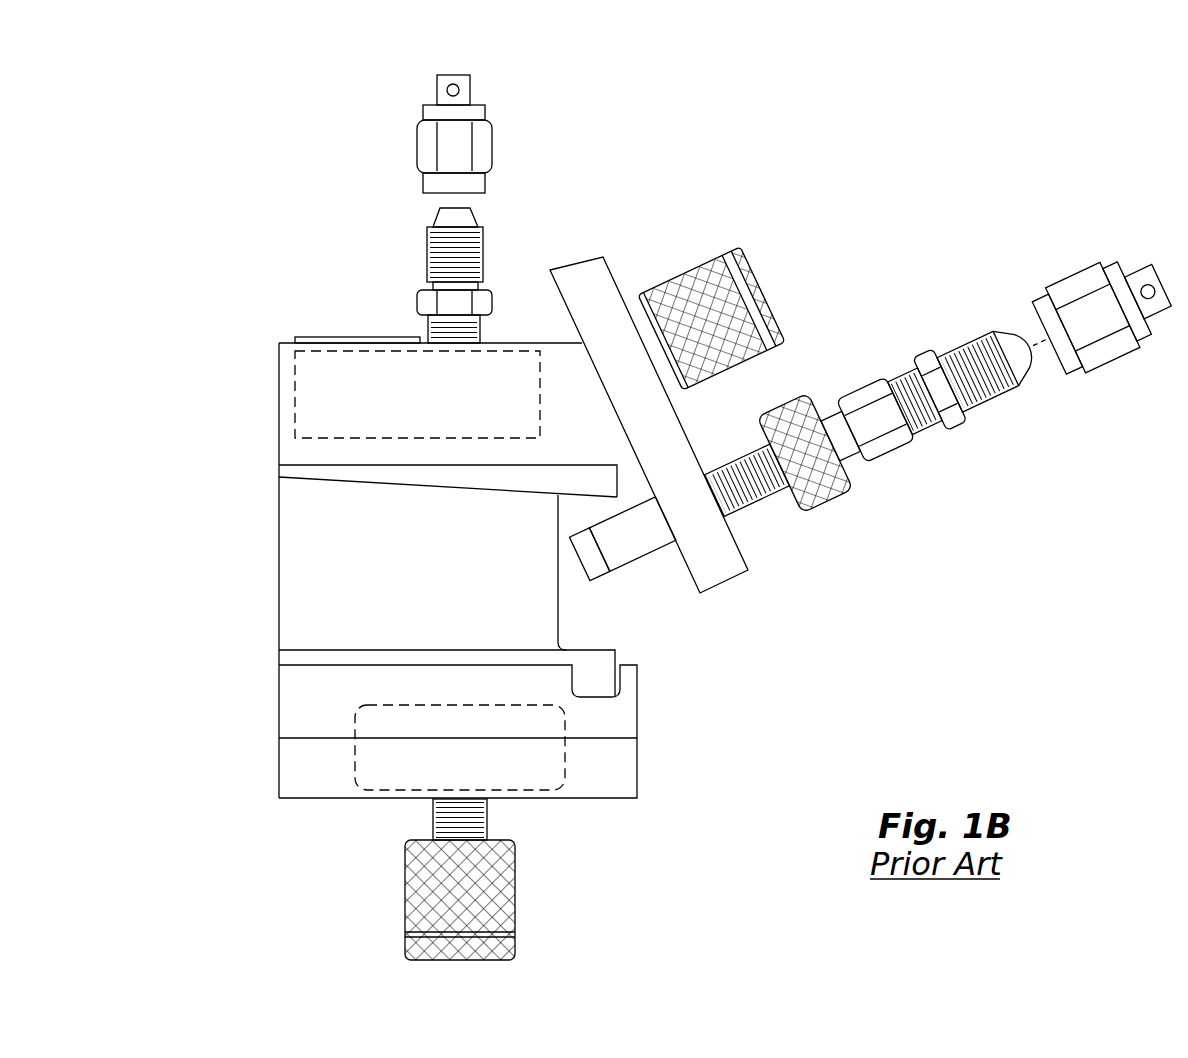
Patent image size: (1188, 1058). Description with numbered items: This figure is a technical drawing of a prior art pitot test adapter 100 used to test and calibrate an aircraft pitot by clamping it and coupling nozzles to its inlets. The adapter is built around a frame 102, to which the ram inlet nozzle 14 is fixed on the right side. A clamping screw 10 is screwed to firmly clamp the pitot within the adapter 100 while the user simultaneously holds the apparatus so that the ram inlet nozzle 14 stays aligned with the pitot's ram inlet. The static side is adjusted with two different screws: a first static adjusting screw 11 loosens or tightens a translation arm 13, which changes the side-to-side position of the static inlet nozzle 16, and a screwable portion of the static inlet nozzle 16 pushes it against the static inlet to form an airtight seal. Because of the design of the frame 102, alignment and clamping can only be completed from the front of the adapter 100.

The pitot test adapter 100 is at (230, 105).
The frame 102 is at (637, 768).
The clamping screw 10 is at (515, 890).
The first static adjusting screw 11 is at (763, 281).
The translation arm 13 is at (599, 270).
The ram inlet nozzle 14 is at (441, 222).
The static inlet nozzle 16 is at (1071, 288).